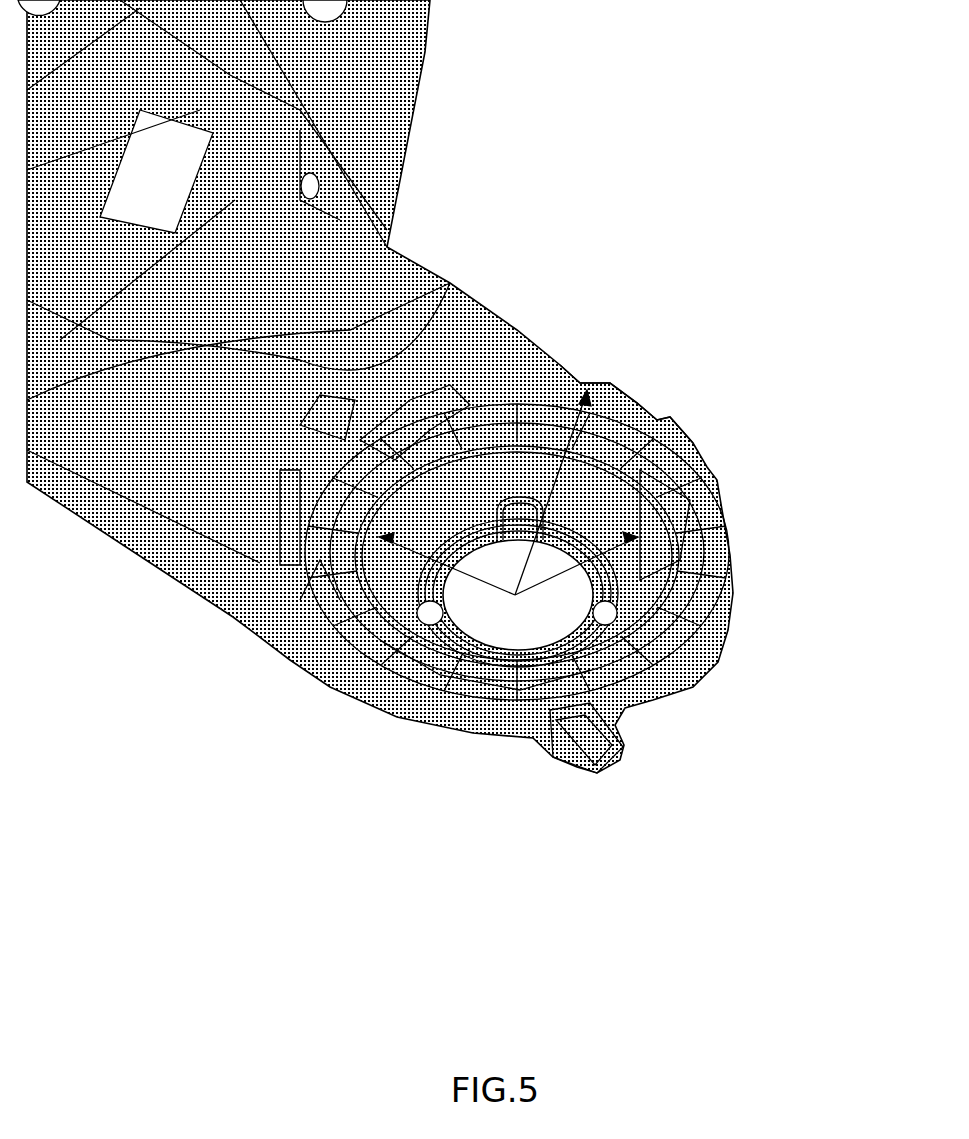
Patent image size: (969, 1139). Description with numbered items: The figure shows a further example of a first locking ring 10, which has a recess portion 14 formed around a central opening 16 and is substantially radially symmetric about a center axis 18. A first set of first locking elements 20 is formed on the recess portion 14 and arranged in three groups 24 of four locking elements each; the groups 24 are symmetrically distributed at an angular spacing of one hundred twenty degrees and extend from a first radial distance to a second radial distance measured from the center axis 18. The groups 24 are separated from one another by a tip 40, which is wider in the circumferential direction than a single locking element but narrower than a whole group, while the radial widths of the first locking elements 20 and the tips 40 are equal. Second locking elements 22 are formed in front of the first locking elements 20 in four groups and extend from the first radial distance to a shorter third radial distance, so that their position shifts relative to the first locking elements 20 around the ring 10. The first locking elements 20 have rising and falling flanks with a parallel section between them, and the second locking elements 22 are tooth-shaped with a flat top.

The first locking ring 10 is at (766, 149).
The recess portion 14 is at (446, 529).
The central opening 16 is at (564, 627).
The center axis 18 is at (515, 595).
The first locking elements 20 is at (670, 432).
The second locking elements 22 is at (443, 428).
The groups of first locking elements 24 is at (600, 357).
The tip 40 is at (388, 414).